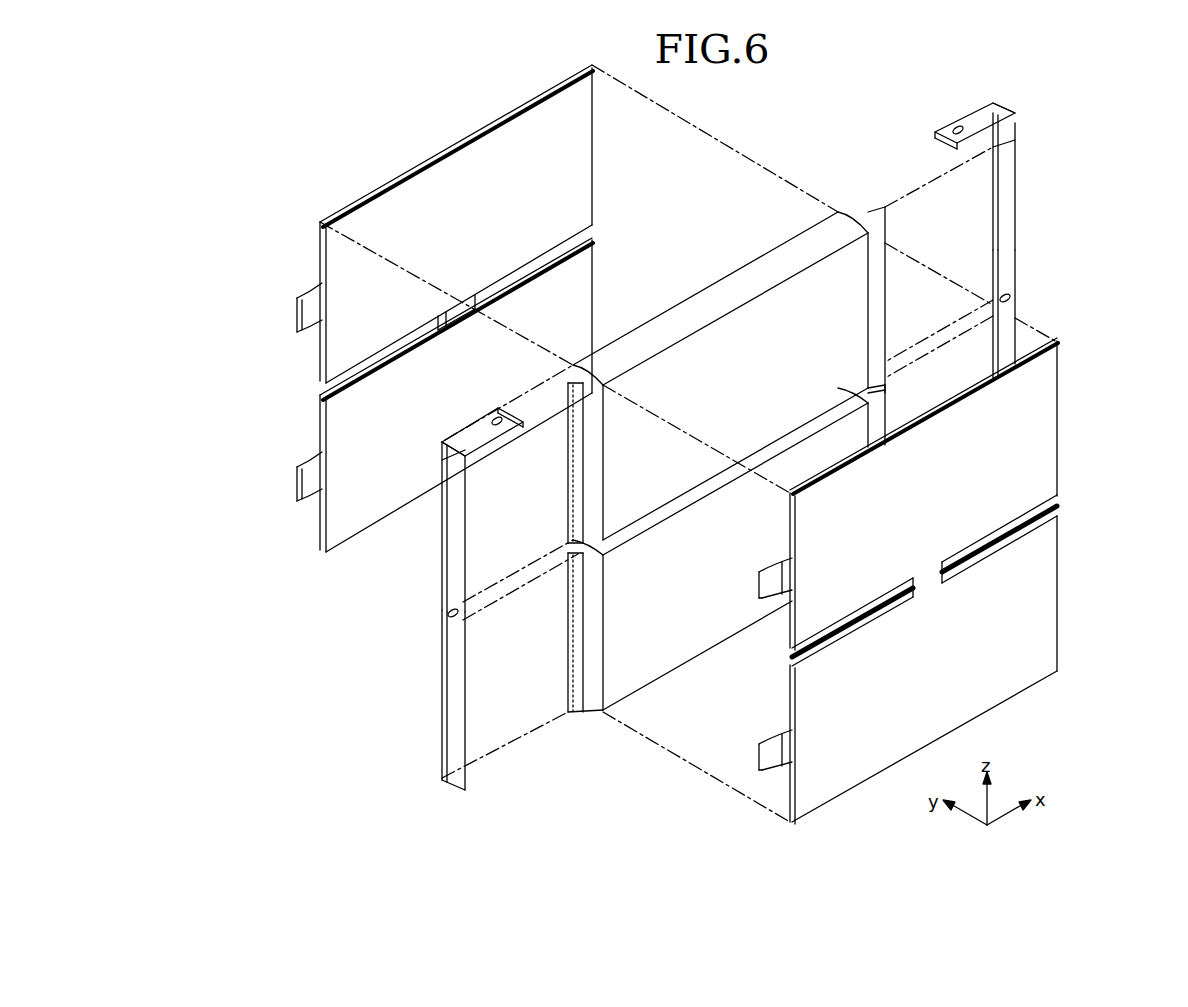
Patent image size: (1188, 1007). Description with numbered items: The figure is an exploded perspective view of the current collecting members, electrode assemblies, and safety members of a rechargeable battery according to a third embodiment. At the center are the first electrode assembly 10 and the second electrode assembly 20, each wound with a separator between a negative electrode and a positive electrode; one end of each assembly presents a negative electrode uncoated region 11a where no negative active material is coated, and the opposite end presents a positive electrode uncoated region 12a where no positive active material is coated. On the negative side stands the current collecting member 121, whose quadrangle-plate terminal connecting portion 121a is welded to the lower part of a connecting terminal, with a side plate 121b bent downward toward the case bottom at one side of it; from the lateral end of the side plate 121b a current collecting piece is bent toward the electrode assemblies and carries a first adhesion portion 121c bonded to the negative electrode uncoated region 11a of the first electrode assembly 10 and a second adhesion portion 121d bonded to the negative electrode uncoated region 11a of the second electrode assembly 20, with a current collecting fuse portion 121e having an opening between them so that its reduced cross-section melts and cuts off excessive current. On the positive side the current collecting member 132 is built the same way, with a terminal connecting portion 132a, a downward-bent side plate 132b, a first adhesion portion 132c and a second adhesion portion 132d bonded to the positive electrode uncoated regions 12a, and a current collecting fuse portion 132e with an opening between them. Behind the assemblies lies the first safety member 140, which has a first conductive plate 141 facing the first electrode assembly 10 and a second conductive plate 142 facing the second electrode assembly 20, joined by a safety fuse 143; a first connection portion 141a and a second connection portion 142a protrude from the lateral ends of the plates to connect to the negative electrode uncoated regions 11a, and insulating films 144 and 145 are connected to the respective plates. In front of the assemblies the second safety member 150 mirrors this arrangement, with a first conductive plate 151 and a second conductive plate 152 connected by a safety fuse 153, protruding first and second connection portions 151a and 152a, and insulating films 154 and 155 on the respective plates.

The first electrode assembly 10 is at (729, 343).
The second electrode assembly 20 is at (680, 676).
The negative electrode uncoated region 11a is at (573, 468).
The positive electrode uncoated region 12a is at (875, 207).
The current collecting member 121 is at (389, 584).
The terminal connecting portion 121a is at (500, 415).
The side plate 121b is at (445, 468).
The first adhesion portion 121c is at (448, 553).
The second adhesion portion 121d is at (448, 696).
The current collecting fuse portion 121e is at (448, 613).
The current collecting member 132 is at (1018, 217).
The terminal connecting portion 132a is at (985, 102).
The side plate 132b is at (1015, 128).
The first adhesion portion 132c is at (1010, 183).
The second adhesion portion 132d is at (1010, 328).
The current collecting fuse portion 132e is at (1012, 298).
The first safety member 140 is at (438, 306).
The first conductive plate 141 is at (441, 224).
The first connection portion 141a is at (300, 300).
The second conductive plate 142 is at (404, 395).
The second connection portion 142a is at (297, 489).
The safety fuse 143 is at (458, 310).
The insulating film 144 is at (385, 210).
The insulating film 145 is at (343, 428).
The second safety member 150 is at (883, 581).
The first conductive plate 151 is at (898, 505).
The first connection portion 151a is at (760, 580).
The second conductive plate 152 is at (883, 659).
The second connection portion 152a is at (773, 757).
The safety fuse 153 is at (922, 582).
The insulating film 154 is at (790, 630).
The insulating film 155 is at (790, 678).